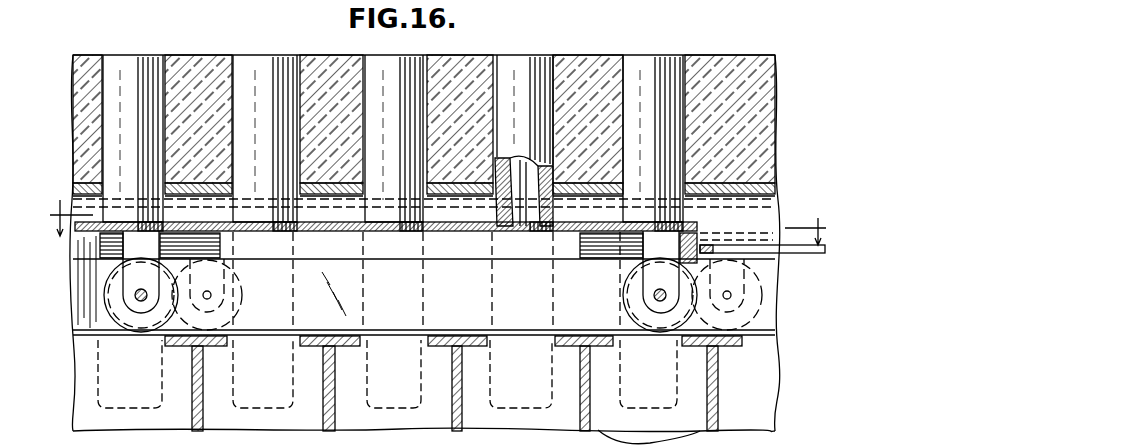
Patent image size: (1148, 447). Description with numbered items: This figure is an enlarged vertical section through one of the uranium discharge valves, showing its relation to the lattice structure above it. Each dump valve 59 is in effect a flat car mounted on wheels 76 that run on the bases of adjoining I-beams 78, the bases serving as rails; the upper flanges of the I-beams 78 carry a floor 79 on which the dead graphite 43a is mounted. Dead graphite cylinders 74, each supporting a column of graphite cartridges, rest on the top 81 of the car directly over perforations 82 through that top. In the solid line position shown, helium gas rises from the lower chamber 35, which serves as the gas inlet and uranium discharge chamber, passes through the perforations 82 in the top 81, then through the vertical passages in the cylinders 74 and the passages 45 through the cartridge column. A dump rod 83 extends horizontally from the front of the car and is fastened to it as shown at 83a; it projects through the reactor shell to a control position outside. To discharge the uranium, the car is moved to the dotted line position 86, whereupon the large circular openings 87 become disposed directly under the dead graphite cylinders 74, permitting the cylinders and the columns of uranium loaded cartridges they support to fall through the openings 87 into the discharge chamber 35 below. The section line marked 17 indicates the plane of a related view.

The dead graphite cylinder 74 is at (253, 68).
The dead graphite 43a is at (757, 136).
The floor 79 is at (772, 192).
The dump rod 83 is at (743, 250).
The section line 17 is at (439, 213).
The circular opening 87 is at (203, 213).
The passage 45 is at (556, 211).
The top of the dump valve car 81 is at (697, 232).
The dump valve 59 is at (285, 262).
The perforation 82 is at (382, 232).
The I-beam 78 is at (760, 266).
The dotted line position 86 is at (757, 279).
The fastening of the dump rod 83a is at (713, 250).
The wheel 76 is at (160, 335).
The lower chamber 35 is at (757, 381).